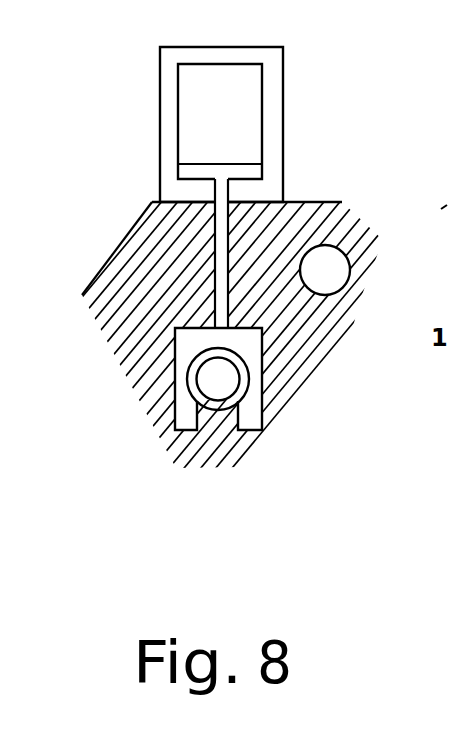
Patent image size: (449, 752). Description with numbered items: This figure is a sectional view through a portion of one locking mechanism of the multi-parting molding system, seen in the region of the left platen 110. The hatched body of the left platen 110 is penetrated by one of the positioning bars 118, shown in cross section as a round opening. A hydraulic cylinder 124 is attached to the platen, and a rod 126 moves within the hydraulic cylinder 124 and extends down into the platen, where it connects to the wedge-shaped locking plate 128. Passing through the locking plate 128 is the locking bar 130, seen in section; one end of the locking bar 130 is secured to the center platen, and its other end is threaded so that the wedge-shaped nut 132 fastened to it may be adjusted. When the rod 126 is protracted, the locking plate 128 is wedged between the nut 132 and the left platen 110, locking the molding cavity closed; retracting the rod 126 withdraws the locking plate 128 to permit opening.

The left platen 110 is at (118, 247).
The positioning bars 118 is at (350, 270).
The hydraulic cylinder 124 is at (160, 101).
The rod 126 is at (228, 222).
The wedge-shaped locking plate 128 is at (182, 406).
The locking bar 130 is at (230, 383).
The wedge-shaped nut 132 is at (247, 398).